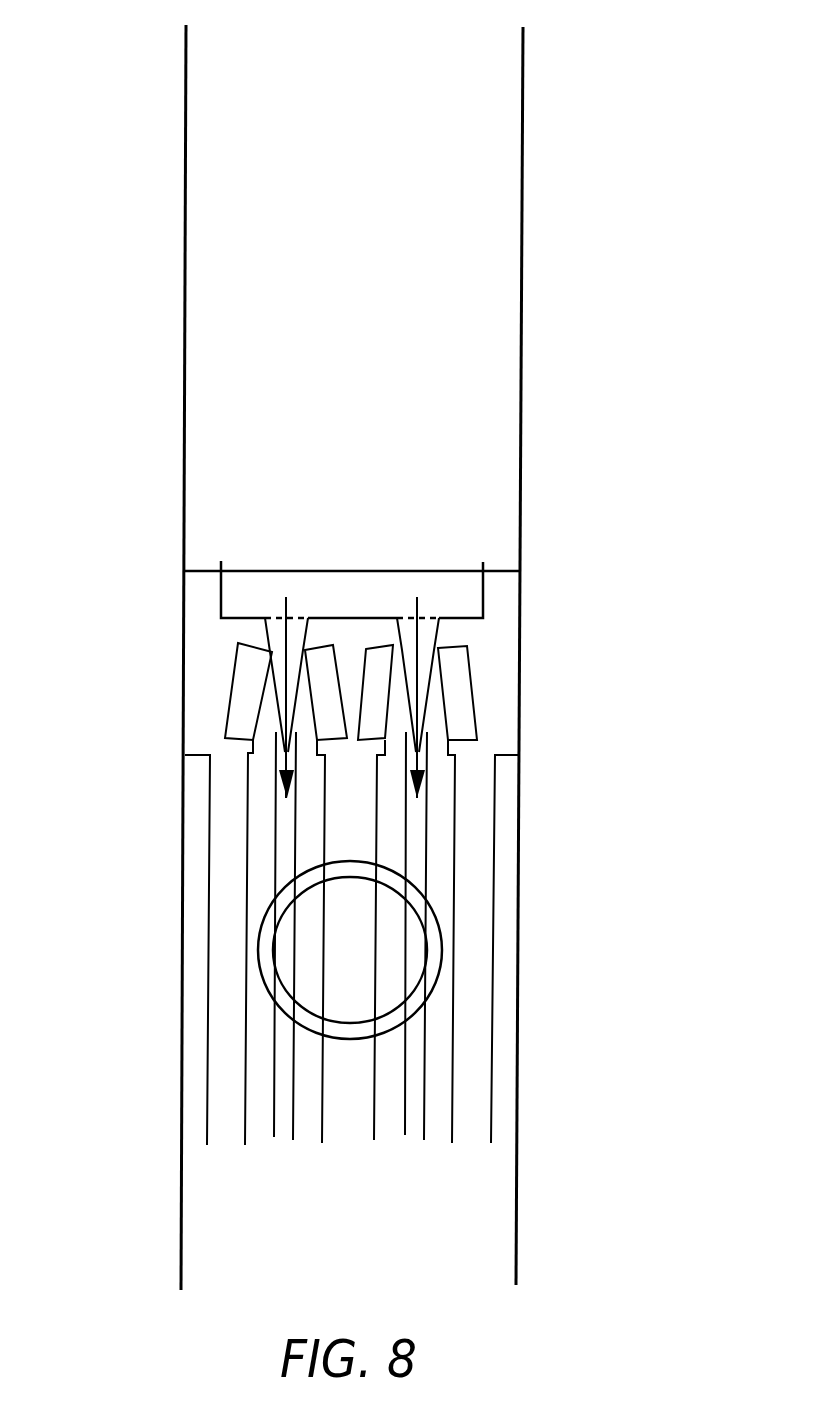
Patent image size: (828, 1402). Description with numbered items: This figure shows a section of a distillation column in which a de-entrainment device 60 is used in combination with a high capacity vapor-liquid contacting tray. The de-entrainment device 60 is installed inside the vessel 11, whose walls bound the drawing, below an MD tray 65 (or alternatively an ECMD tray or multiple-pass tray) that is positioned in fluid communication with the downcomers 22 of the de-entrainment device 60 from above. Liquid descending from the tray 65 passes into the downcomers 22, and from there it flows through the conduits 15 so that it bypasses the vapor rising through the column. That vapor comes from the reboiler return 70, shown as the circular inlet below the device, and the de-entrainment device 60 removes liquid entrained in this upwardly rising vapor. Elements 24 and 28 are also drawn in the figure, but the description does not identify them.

The vessel 11 is at (523, 275).
The conduits 15 is at (292, 1122).
The downcomers 22 is at (272, 652).
The block 24 is at (231, 701).
The finger 28 is at (374, 1135).
The de-entrainment device 60 is at (558, 678).
The MD tray 65 is at (466, 593).
The reboiler return 70 is at (350, 950).